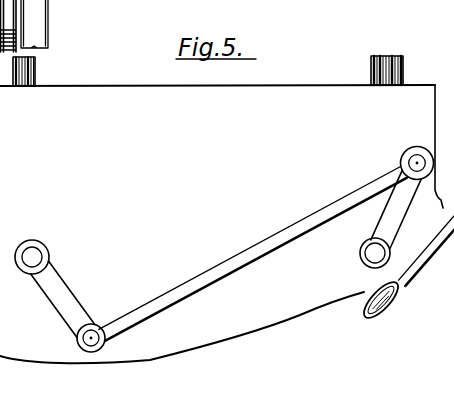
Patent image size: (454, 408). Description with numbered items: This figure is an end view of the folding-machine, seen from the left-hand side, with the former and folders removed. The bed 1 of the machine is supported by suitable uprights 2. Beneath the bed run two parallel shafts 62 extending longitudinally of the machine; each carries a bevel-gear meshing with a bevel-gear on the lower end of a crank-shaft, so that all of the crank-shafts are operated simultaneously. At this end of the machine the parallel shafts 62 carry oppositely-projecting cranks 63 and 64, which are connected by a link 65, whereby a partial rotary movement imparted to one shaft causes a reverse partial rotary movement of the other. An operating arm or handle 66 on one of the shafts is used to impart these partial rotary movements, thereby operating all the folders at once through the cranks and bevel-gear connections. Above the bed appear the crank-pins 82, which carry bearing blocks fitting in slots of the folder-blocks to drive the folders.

The bed 1 is at (306, 85).
The uprights 2 is at (252, 320).
The parallel shafts 62 is at (34, 256).
The crank 63 is at (77, 308).
The crank 64 is at (378, 228).
The link 65 is at (273, 243).
The operating arm or handle 66 is at (421, 258).
The crank-pins 82 is at (40, 71).